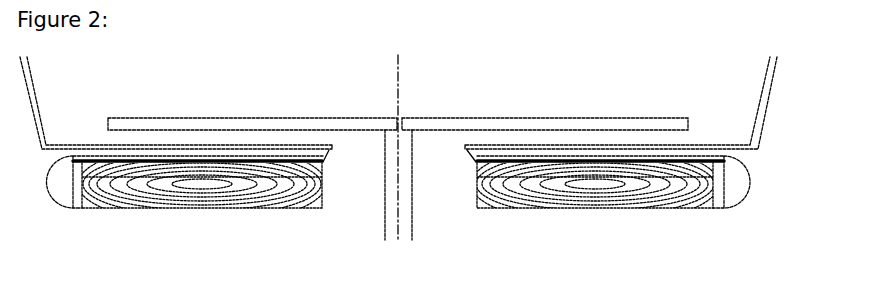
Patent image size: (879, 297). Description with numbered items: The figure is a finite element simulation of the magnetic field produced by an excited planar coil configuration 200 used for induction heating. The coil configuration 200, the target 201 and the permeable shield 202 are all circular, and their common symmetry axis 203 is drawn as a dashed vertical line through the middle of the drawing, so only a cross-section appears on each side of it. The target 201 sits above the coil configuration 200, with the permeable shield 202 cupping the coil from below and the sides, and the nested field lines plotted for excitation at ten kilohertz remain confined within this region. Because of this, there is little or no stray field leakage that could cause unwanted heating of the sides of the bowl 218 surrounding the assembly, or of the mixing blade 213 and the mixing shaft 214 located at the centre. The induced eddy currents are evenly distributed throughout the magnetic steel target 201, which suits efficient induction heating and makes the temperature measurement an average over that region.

The coil configuration 200 is at (713, 181).
The target 201 is at (725, 157).
The permeable shield 202 is at (701, 210).
The symmetry axis 203 is at (400, 82).
The mixing blade 213 is at (498, 123).
The mixing shaft 214 is at (413, 222).
The bowl 218 is at (765, 79).